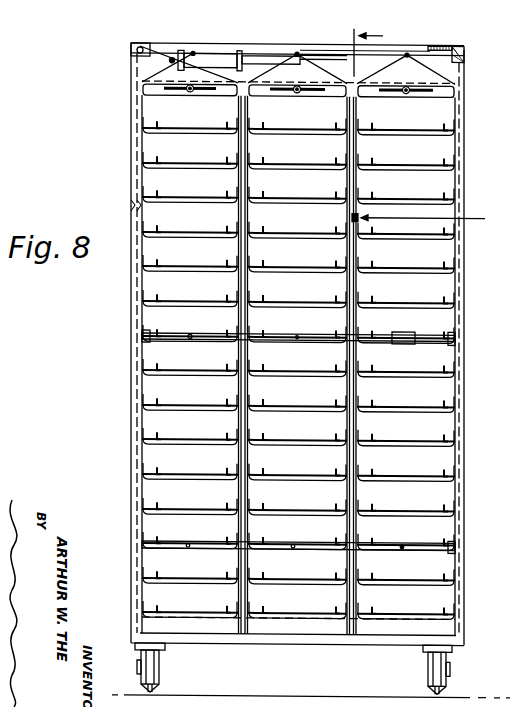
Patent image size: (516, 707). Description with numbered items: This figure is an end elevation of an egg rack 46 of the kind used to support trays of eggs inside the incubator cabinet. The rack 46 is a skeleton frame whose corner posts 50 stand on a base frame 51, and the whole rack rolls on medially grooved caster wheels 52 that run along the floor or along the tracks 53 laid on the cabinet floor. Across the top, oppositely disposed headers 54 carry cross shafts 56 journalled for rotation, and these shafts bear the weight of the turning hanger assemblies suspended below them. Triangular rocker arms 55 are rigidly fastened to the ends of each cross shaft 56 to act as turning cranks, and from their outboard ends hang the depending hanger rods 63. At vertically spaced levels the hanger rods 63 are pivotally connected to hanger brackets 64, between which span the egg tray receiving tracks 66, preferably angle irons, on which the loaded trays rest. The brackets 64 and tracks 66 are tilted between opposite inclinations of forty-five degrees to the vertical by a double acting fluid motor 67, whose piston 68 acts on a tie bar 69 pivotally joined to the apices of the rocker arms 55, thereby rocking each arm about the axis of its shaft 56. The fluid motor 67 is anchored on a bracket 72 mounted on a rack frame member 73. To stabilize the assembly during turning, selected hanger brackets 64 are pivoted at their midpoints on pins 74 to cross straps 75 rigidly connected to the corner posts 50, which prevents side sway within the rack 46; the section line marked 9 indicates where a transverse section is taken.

The section line 9- 9 is at (426, 130).
The rack 46 is at (132, 163).
The corner posts 50 is at (131, 380).
The base frame 51 is at (292, 641).
The caster wheels 52 is at (165, 665).
The tracks 53 is at (152, 694).
The headers 54 is at (455, 72).
The rocker arms 55 is at (160, 72).
The cross shafts 56 is at (191, 92).
The hanger rods 63 is at (143, 141).
The hanger brackets 64 is at (204, 196).
The egg tray receiving tracks 66 is at (334, 298).
The double acting fluid motor 67 is at (220, 62).
The piston 68 is at (263, 62).
The tie bar 69 is at (322, 50).
The bracket 72 is at (170, 60).
The rack frame member 73 is at (143, 48).
The pins 74 is at (190, 334).
The cross straps 75 is at (170, 329).